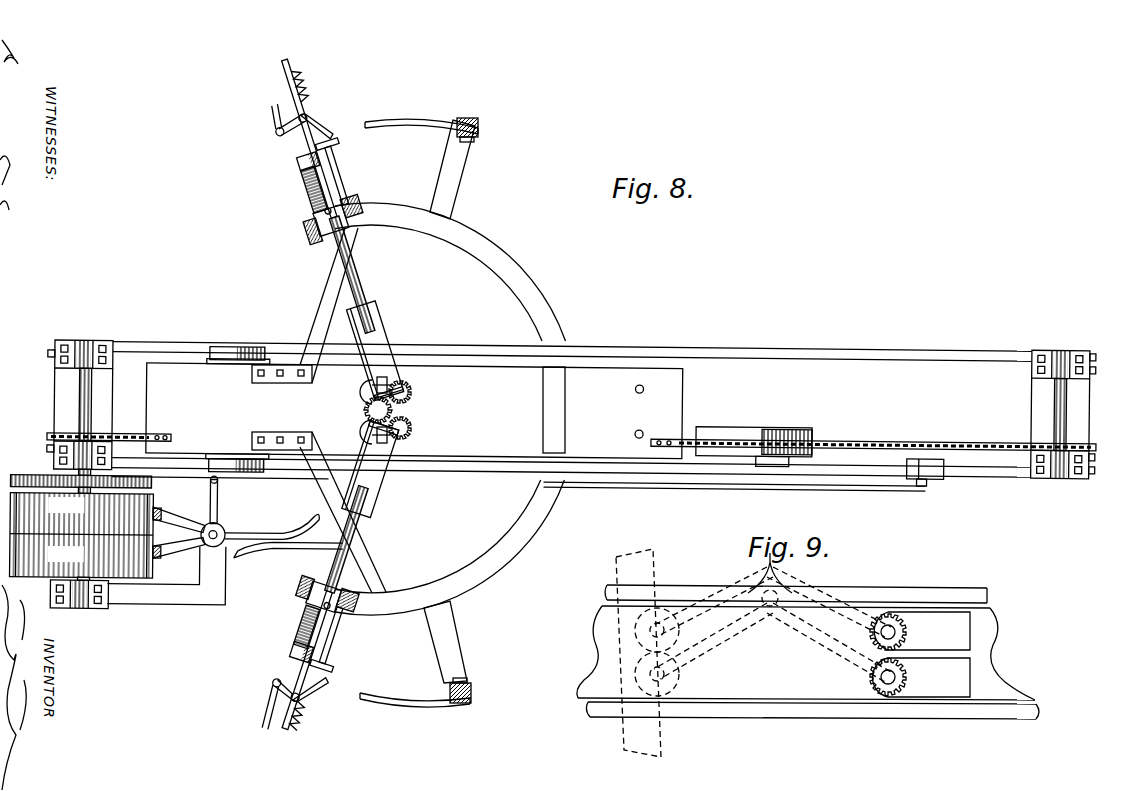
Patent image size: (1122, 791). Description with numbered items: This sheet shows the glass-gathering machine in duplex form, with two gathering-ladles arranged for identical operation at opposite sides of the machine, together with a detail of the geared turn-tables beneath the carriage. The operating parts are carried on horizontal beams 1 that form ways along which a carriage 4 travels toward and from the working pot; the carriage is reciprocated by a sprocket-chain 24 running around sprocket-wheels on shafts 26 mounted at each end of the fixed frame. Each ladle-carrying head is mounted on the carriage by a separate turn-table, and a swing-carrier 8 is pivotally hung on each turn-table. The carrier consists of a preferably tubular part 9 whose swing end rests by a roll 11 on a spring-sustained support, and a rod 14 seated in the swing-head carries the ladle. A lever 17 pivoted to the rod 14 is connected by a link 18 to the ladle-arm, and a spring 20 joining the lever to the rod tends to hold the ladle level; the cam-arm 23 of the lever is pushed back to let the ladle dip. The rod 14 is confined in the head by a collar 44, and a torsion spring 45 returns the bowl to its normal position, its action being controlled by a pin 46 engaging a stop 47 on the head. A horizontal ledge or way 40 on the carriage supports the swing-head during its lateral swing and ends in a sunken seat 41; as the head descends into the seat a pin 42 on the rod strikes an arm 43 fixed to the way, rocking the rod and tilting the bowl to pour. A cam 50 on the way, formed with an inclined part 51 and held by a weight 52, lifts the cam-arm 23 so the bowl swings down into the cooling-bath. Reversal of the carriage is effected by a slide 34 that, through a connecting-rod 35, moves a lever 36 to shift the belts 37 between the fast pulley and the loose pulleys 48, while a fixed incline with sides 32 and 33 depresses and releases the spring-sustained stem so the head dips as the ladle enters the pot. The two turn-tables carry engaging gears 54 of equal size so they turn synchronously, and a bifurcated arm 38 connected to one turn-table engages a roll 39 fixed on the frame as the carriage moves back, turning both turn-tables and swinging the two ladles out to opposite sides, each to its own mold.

In FIG. 8, the horizontal beams 1 is at (940, 349).
In FIG. 9, the horizontal beams 1 is at (840, 598).
In FIG. 8, the carriage 4 is at (414, 411).
In FIG. 9, the carriage 4 is at (806, 653).
In FIG. 8, the swing-carrier 8 is at (373, 409).
In FIG. 8, the tubular part 9 is at (350, 292).
In FIG. 8, the roll 11 is at (305, 232).
In FIG. 8, the ladle-carrying rod 14 is at (302, 663).
In FIG. 8, the lever 17 is at (278, 137).
In FIG. 8, the link 18 is at (263, 416).
In FIG. 8, the spring 20 is at (305, 93).
In FIG. 8, the cam-arm 23 is at (328, 131).
In FIG. 8, the sprocket-chain 24 is at (571, 432).
In FIG. 8, the shafts 26 is at (570, 479).
In FIG. 8, the incline side 32 is at (754, 433).
In FIG. 8, the incline side 33 is at (805, 422).
In FIG. 8, the slide 34 is at (932, 470).
In FIG. 8, the connecting-rod 35 is at (703, 483).
In FIG. 8, the lever 36 is at (219, 513).
In FIG. 8, the belts 37 is at (189, 533).
In FIG. 8, the bifurcated arm 38 is at (302, 548).
In FIG. 9, the bifurcated arm 38 is at (780, 590).
In FIG. 8, the roll 39 is at (292, 503).
In FIG. 8, the ledge or way 40 is at (488, 250).
In FIG. 8, the sunken seat 41 is at (312, 215).
In FIG. 8, the pin or lug 42 is at (341, 152).
In FIG. 8, the arm 43 is at (345, 181).
In FIG. 8, the collar 44 is at (390, 384).
In FIG. 8, the torsion spring 45 is at (303, 191).
In FIG. 8, the pin or lug 46 is at (362, 398).
In FIG. 8, the stop 47 is at (393, 411).
In FIG. 8, the loose pulleys 48 is at (82, 526).
In FIG. 8, the cam 50 is at (424, 123).
In FIG. 8, the inclined part 51 is at (452, 203).
In FIG. 8, the weight 52 is at (478, 122).
In FIG. 8, the engaging gear 54 is at (410, 395).
In FIG. 9, the engaging gear 54 is at (920, 655).